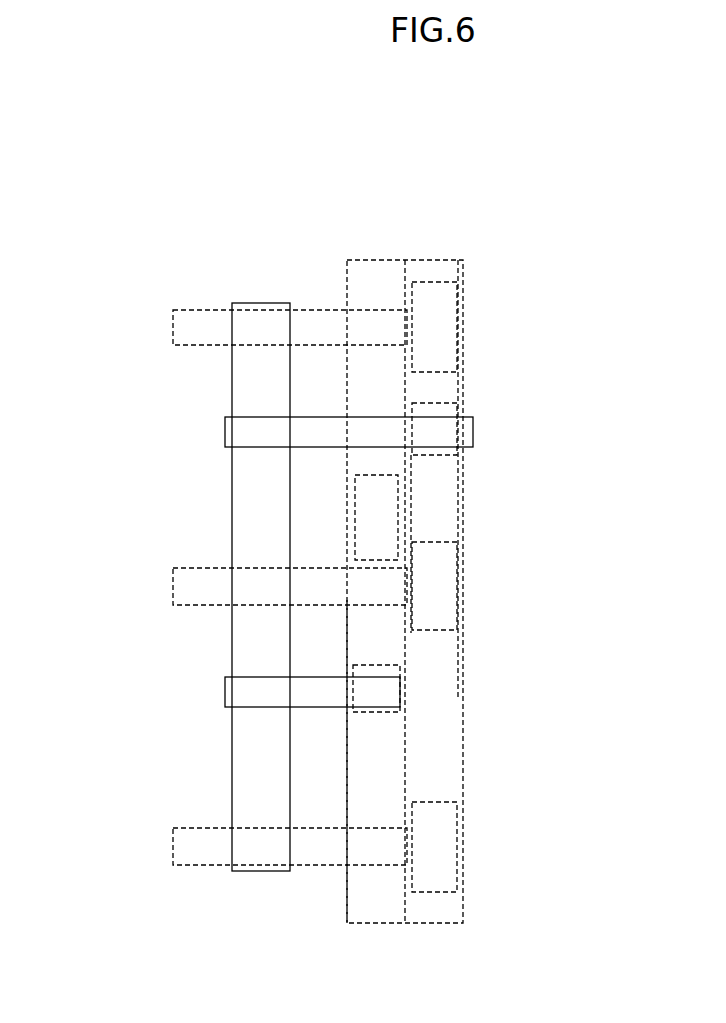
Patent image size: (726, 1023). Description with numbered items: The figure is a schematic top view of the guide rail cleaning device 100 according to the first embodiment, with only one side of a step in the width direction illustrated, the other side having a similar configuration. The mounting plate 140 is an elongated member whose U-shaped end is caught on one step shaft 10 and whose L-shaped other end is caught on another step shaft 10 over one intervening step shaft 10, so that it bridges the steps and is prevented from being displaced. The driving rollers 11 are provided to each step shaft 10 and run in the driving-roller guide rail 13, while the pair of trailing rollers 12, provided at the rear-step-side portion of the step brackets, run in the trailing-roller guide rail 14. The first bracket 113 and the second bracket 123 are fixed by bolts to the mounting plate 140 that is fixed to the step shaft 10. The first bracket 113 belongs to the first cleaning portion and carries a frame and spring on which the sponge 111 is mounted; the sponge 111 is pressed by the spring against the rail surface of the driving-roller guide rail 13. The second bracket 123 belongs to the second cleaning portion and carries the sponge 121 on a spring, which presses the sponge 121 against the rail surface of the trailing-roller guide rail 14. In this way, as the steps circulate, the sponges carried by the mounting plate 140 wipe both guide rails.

The guide rail cleaning device 100 is at (348, 208).
The step shaft 10 is at (193, 310).
The driving rollers 11 is at (455, 293).
The sponge 111 is at (432, 403).
The first bracket 113 is at (226, 435).
The trailing rollers 12 is at (398, 512).
The sponge 121 is at (400, 708).
The second bracket 123 is at (226, 690).
The driving-roller guide rail 13 is at (463, 858).
The trailing-roller guide rail 14 is at (347, 888).
The mounting plate 140 is at (232, 502).